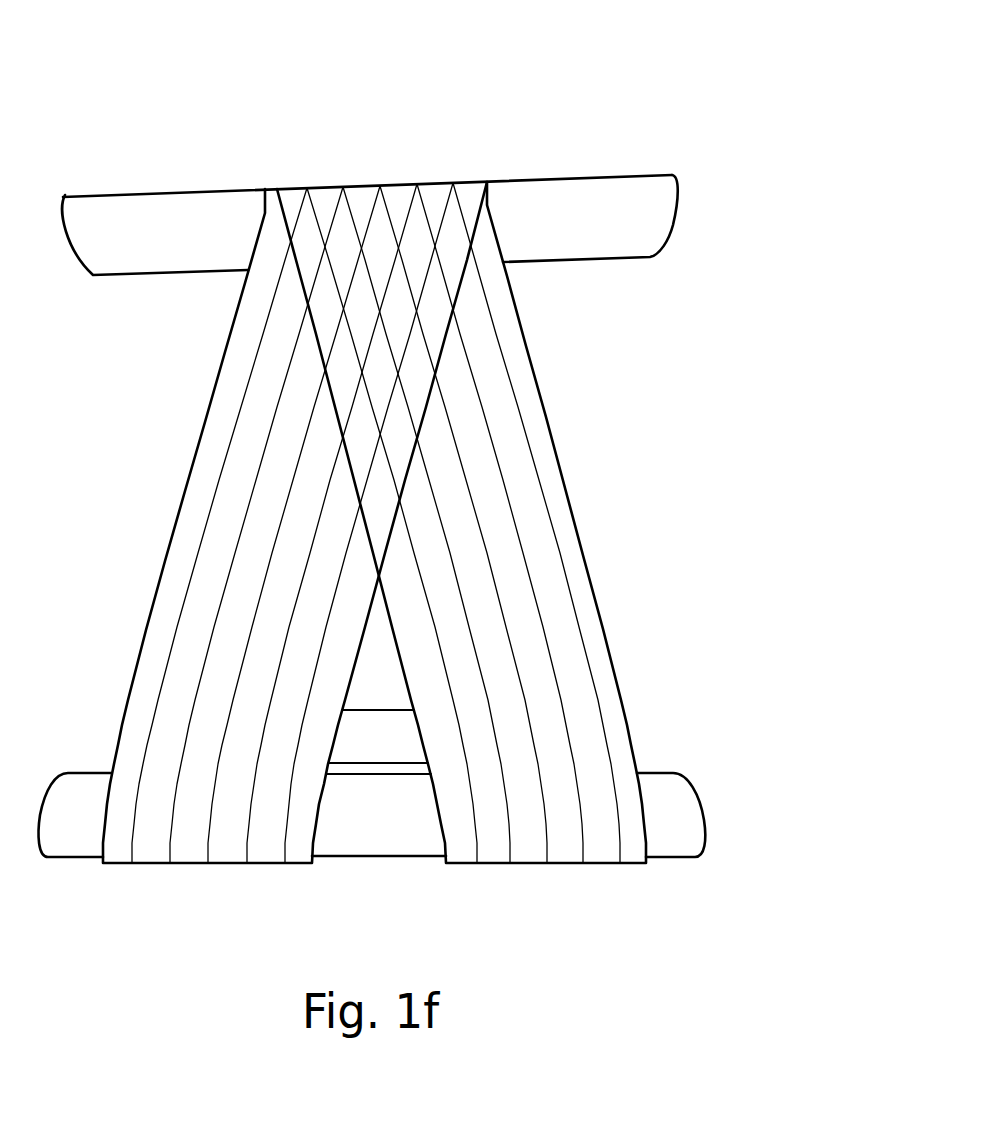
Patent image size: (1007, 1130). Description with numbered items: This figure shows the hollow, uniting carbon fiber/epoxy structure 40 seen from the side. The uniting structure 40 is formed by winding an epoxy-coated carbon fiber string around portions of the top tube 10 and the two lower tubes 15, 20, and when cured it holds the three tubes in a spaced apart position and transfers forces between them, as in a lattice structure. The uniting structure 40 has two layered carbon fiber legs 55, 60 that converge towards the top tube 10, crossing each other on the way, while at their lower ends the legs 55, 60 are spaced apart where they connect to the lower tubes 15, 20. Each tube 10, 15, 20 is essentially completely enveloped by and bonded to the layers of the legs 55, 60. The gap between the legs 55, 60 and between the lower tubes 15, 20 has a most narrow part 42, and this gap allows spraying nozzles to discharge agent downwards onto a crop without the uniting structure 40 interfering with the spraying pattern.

The uniting structure 40 is at (372, 481).
The top tube 10 is at (624, 192).
The lower tube 15 is at (353, 840).
The leg 55 is at (195, 636).
The leg 60 is at (557, 372).
The lower tube 20 is at (400, 752).
The most narrow part of the gap 42 is at (378, 670).